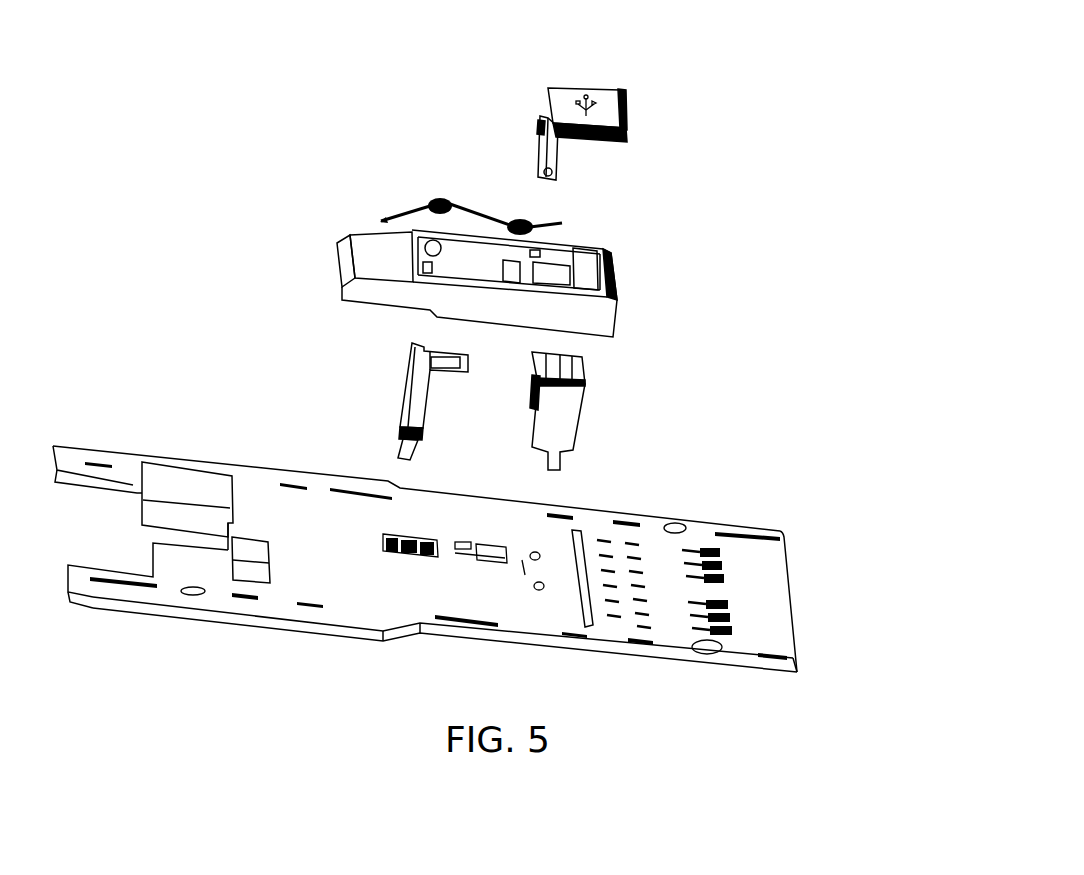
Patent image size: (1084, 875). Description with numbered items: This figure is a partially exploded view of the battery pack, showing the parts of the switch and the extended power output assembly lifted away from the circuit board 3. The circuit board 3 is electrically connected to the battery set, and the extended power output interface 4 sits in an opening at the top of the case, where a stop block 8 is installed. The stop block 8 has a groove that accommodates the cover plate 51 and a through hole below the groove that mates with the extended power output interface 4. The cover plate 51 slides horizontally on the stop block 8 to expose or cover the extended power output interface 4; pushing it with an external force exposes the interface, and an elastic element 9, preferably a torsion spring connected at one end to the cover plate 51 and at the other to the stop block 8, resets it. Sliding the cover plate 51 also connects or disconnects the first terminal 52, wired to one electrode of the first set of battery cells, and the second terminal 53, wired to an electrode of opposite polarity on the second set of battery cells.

The circuit board 3 is at (767, 607).
The extended power output interface 4 is at (557, 422).
The stop block 8 is at (590, 313).
The elastic element 9 is at (433, 200).
The cover plate 51 is at (623, 98).
The first terminal 52 is at (537, 130).
The second terminal 53 is at (413, 400).